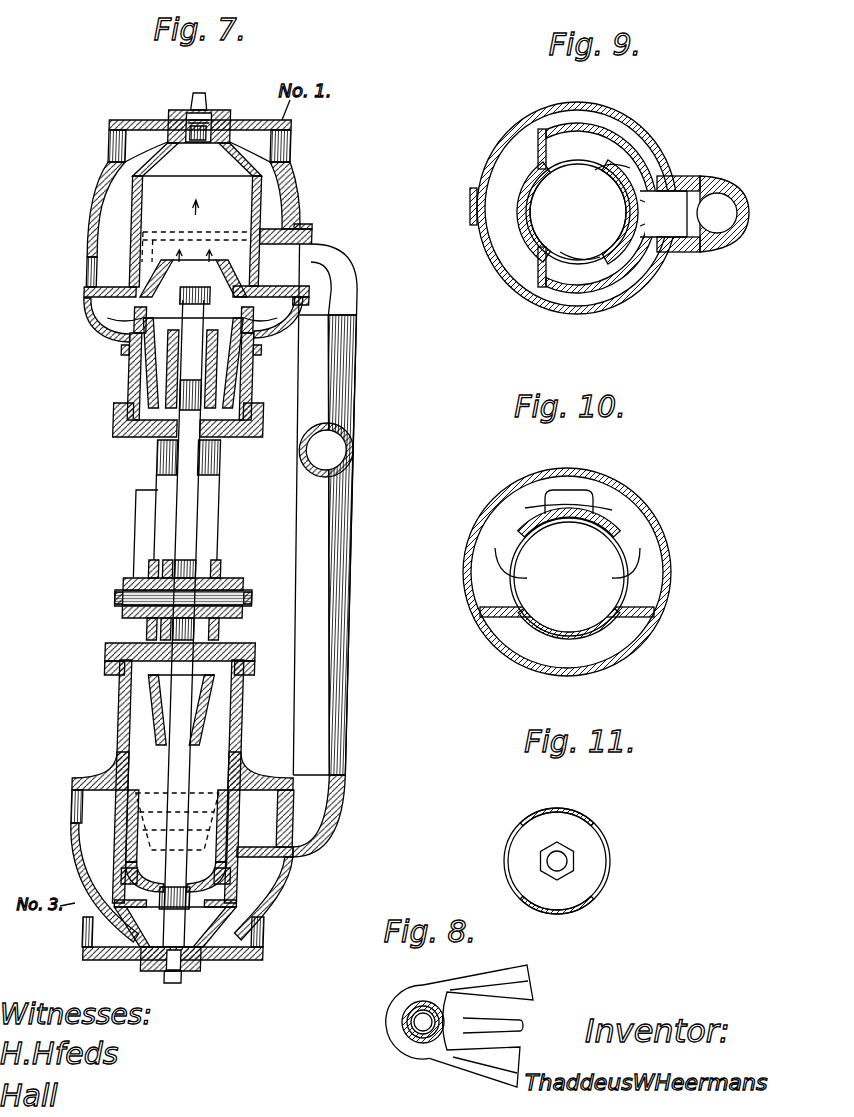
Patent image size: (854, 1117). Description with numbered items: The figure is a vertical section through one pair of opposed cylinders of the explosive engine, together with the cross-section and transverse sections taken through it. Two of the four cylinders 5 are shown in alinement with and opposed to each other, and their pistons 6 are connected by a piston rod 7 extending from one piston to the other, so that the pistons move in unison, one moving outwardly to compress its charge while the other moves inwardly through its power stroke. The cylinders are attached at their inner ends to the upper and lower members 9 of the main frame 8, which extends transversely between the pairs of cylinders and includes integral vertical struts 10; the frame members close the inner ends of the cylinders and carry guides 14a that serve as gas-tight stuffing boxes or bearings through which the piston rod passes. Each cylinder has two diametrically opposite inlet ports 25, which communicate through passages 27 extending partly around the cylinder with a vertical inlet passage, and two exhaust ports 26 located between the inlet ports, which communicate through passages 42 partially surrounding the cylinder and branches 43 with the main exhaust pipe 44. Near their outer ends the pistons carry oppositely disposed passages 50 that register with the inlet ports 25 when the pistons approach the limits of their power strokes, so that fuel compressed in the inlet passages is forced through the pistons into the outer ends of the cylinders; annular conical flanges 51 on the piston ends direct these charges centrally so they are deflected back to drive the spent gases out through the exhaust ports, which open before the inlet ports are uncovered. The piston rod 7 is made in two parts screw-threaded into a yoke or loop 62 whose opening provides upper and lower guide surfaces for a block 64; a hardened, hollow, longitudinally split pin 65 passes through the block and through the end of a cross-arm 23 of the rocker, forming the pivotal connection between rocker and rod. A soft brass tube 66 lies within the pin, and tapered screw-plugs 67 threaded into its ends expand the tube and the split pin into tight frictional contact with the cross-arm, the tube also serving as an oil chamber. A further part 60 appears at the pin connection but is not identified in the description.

In FIG. 7, the cylinder 5 is at (92, 197).
In FIG. 9, the cylinder 5 is at (520, 290).
In FIG. 10, the cylinder 5 is at (672, 592).
In FIG. 7, the piston 6 is at (134, 360).
In FIG. 11, the piston 6 is at (610, 866).
In FIG. 7, the piston rod 7 is at (182, 465).
In FIG. 7, the main frame 8 is at (120, 430).
In FIG. 7, the upper and lower frame members 9 is at (133, 247).
In FIG. 7, the vertical strut 10 is at (98, 300).
In FIG. 7, the guide 14a is at (165, 378).
In FIG. 7, the cross-arm 23 is at (130, 615).
In FIG. 8, the cross-arm 23 is at (406, 993).
In FIG. 7, the inlet port 25 is at (140, 322).
In FIG. 10, the inlet port 25 is at (620, 556).
In FIG. 7, the exhaust port 26 is at (160, 265).
In FIG. 9, the exhaust port 26 is at (600, 155).
In FIG. 7, the inlet passage 27 is at (262, 327).
In FIG. 10, the inlet passage 27 is at (567, 603).
In FIG. 7, the exhaust passage 42 is at (263, 252).
In FIG. 9, the exhaust passage 42 is at (636, 160).
In FIG. 7, the exhaust branch 43 is at (362, 392).
In FIG. 9, the exhaust branch 43 is at (727, 222).
In FIG. 7, the main exhaust pipe 44 is at (364, 452).
In FIG. 7, the piston passage 50 is at (128, 350).
In FIG. 11, the piston passage 50 is at (512, 868).
In FIG. 7, the annular conical flange 51 is at (215, 282).
In FIG. 8, the bushing 60 is at (402, 1015).
In FIG. 7, the yoke 62 is at (162, 568).
In FIG. 7, the block 64 is at (235, 576).
In FIG. 7, the pin 65 is at (136, 584).
In FIG. 8, the pin 65 is at (413, 1040).
In FIG. 7, the soft metal tube 66 is at (245, 615).
In FIG. 7, the tapered screw-plug 67 is at (128, 597).